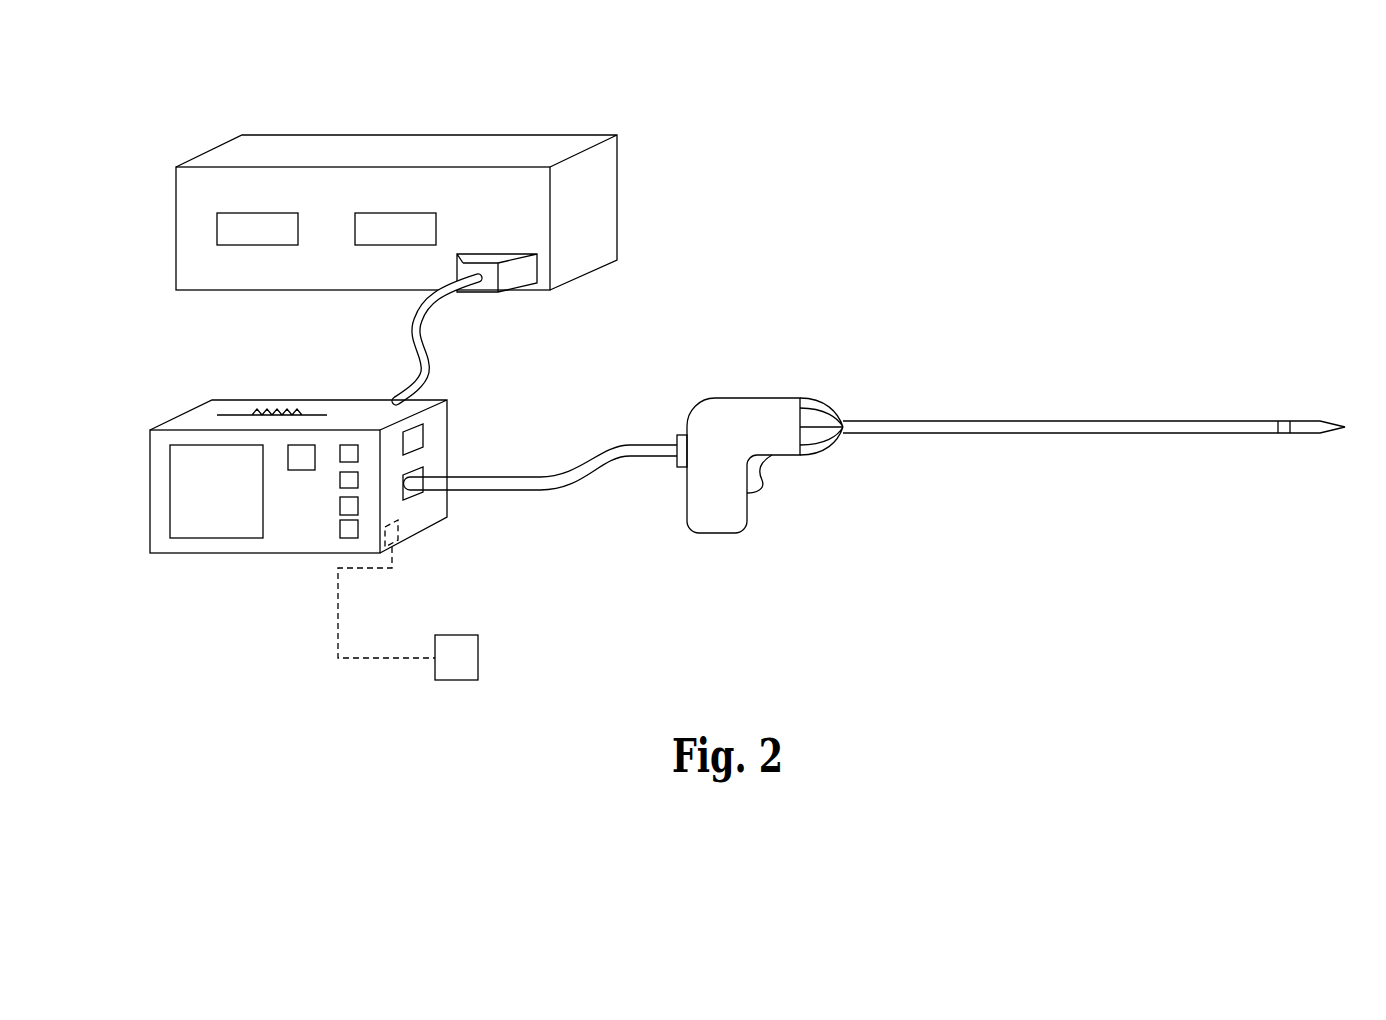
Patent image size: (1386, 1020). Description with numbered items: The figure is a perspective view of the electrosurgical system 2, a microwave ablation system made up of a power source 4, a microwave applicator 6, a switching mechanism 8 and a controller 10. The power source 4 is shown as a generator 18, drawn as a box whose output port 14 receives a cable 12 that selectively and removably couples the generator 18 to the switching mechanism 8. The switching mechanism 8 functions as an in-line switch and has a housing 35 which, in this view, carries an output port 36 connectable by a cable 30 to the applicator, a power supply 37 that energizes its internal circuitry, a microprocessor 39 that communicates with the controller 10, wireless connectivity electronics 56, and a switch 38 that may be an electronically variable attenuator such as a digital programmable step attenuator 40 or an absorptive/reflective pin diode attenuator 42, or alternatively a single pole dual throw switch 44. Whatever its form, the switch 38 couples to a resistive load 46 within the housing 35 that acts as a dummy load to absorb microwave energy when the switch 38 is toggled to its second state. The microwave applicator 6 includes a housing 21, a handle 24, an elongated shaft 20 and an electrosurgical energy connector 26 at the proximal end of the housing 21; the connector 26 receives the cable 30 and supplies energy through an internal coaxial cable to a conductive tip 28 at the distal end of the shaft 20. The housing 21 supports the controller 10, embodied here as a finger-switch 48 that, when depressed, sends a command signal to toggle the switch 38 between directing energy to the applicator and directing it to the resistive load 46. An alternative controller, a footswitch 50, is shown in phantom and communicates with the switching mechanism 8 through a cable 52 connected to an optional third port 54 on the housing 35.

The electrosurgical system 2 is at (360, 82).
The power source 4 is at (407, 205).
The generator 18 is at (342, 205).
The output port 14 is at (510, 280).
The cable 12 is at (420, 340).
The switching mechanism 8 is at (306, 494).
The resistive load 46 is at (237, 412).
The microprocessor 39 is at (303, 445).
The single pole dual throw switch 44 is at (350, 445).
The absorptive/reflective pin diode attenuator 42 is at (338, 478).
The digital programmable step attenuator 40 is at (338, 503).
The power supply 37 is at (338, 528).
The switch 38 is at (168, 487).
The housing 35 is at (273, 493).
The wireless connectivity electronics 56 is at (423, 437).
The output port 36 is at (417, 473).
The third port 54 is at (398, 530).
The cable 52 is at (348, 590).
The footswitch 50 is at (457, 635).
The cable 30 is at (570, 463).
The microwave applicator 6 is at (1027, 464).
The electrosurgical energy connector 26 is at (682, 433).
The controller 10 is at (765, 464).
The housing 21 is at (748, 407).
The handle 24 is at (717, 523).
The finger-switch 48 is at (763, 465).
The elongated shaft 20 is at (1110, 407).
The conductive tip 28 is at (1315, 427).